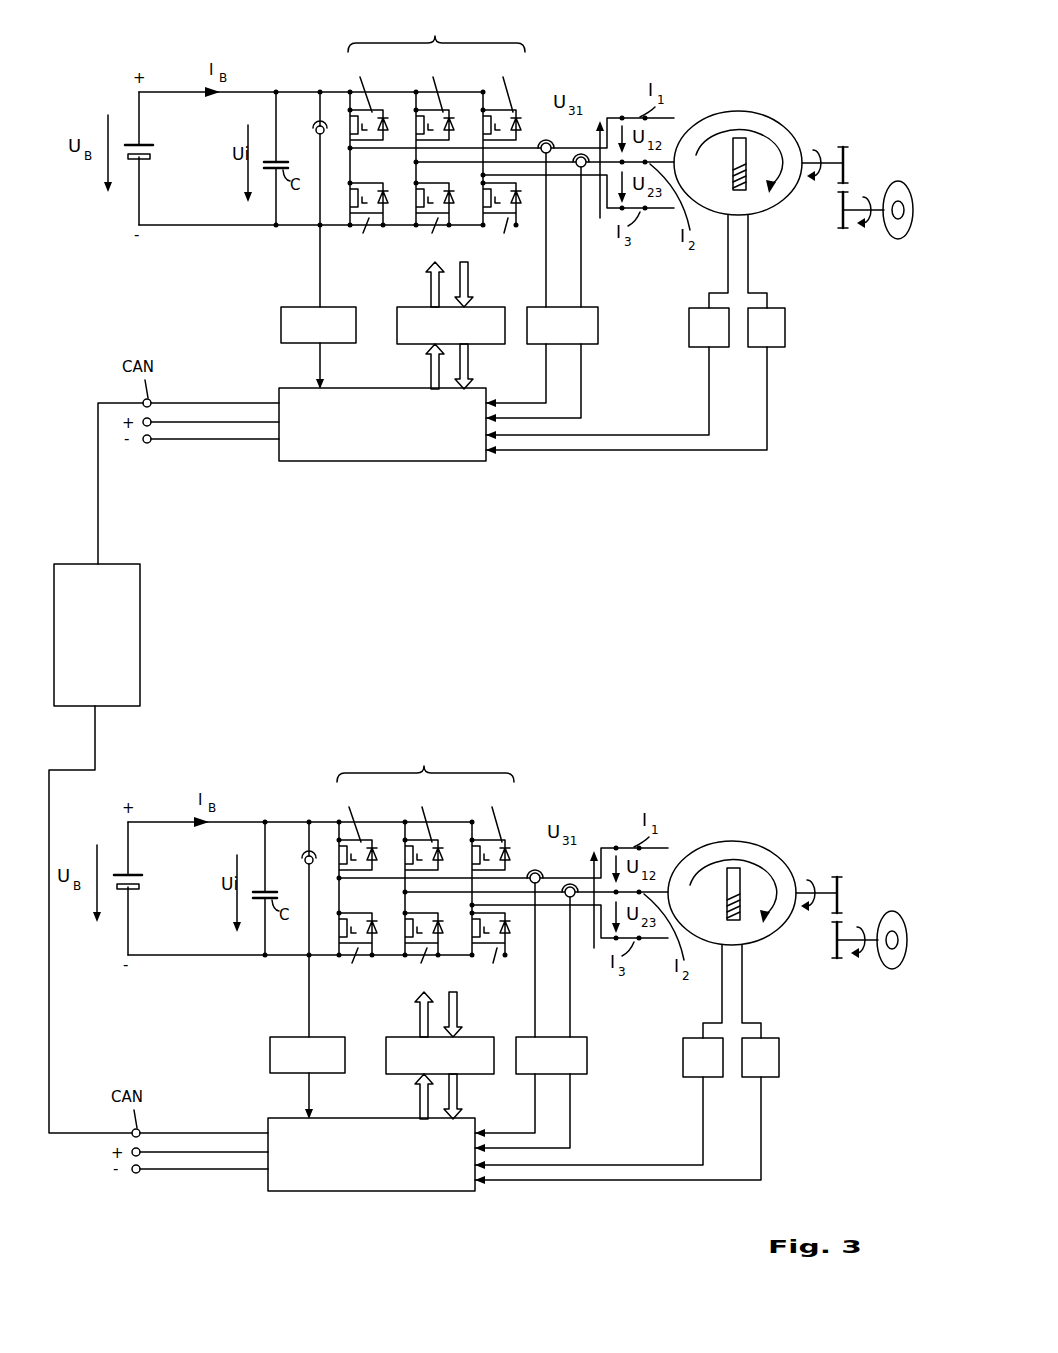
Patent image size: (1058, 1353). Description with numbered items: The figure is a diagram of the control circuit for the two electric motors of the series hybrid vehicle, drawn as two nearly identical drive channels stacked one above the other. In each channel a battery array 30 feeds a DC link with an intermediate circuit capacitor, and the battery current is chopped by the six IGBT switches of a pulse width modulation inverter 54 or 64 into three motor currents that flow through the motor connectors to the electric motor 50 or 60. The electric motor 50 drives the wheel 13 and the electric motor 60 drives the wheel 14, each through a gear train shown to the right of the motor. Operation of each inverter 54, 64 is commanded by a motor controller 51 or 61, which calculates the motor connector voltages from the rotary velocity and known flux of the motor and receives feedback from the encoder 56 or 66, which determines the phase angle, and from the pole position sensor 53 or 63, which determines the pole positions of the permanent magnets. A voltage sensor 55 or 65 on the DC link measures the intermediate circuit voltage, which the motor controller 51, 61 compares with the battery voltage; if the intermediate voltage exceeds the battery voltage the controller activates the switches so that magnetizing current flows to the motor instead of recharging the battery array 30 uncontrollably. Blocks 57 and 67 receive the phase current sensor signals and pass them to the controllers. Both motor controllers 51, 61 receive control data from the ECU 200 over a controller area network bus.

The pulse width modulation inverter 54 is at (437, 133).
The battery array 30 is at (160, 160).
The electric motor 50 is at (764, 116).
The wheel 13 is at (900, 181).
The voltage sensor 55 is at (290, 313).
The phase current measuring unit of first drive 57 is at (585, 321).
The encoder 56 is at (694, 316).
The pole position sensor 53 is at (778, 323).
The motor controller 51 is at (442, 450).
The ECU 200 is at (140, 637).
The pulse width modulation inverter 64 is at (426, 863).
The electric motor 60 is at (758, 846).
The wheel 14 is at (894, 911).
The voltage sensor 65 is at (279, 1043).
The phase current measuring unit of second drive 67 is at (584, 1048).
The encoder 66 is at (687, 1056).
The pole position sensor 63 is at (777, 1056).
The motor controller 61 is at (407, 1178).